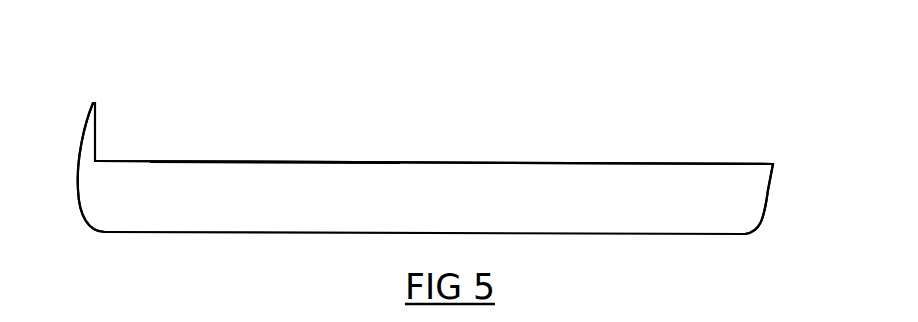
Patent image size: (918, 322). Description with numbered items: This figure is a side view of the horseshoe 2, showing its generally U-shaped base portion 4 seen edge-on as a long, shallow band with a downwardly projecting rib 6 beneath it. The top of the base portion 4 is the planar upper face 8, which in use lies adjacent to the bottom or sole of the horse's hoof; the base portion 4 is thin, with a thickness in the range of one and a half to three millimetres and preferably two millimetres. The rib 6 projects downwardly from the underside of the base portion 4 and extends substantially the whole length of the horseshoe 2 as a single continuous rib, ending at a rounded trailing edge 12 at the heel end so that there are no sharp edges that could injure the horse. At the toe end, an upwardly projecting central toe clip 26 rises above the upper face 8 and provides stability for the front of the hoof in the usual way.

The horseshoe 2 is at (105, 60).
The toe clip 26 is at (87, 128).
The planar upper face 8 is at (180, 162).
The base portion 4 is at (243, 142).
The rib 6 is at (98, 199).
The rounded trailing edge 12 is at (770, 192).